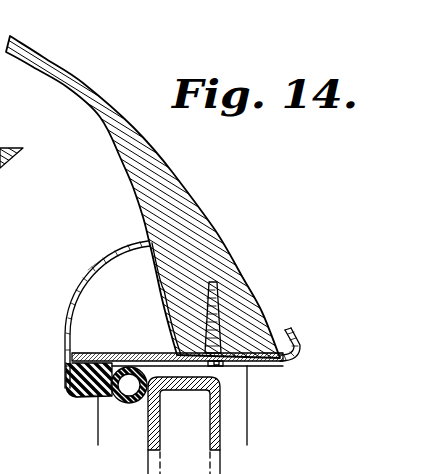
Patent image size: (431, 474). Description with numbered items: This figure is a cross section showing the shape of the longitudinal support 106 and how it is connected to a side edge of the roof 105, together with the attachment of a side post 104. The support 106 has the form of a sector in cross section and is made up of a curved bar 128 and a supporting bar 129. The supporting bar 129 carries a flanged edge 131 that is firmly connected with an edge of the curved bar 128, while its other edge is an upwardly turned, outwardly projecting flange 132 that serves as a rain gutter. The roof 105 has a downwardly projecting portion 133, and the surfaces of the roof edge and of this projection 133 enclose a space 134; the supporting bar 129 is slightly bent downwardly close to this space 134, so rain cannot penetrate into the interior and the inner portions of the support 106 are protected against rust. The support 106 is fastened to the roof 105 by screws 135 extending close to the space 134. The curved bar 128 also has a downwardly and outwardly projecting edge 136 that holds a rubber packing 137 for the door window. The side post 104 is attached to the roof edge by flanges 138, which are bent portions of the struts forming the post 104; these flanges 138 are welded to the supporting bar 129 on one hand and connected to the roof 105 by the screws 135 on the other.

The side post 104 is at (230, 425).
The roof 105 is at (135, 144).
The longitudinal support 106 is at (120, 288).
The curved bar 128 is at (101, 266).
The supporting bar 129 is at (90, 348).
The flanged edge 131 is at (72, 383).
The outwardly projecting flange 132 is at (298, 337).
The downwardly projecting portion 133 is at (270, 364).
The space 134 is at (257, 367).
The screws 135 is at (220, 297).
The projecting edge 136 is at (79, 400).
The rubber packing 137 is at (128, 401).
The flanges 138 is at (151, 353).